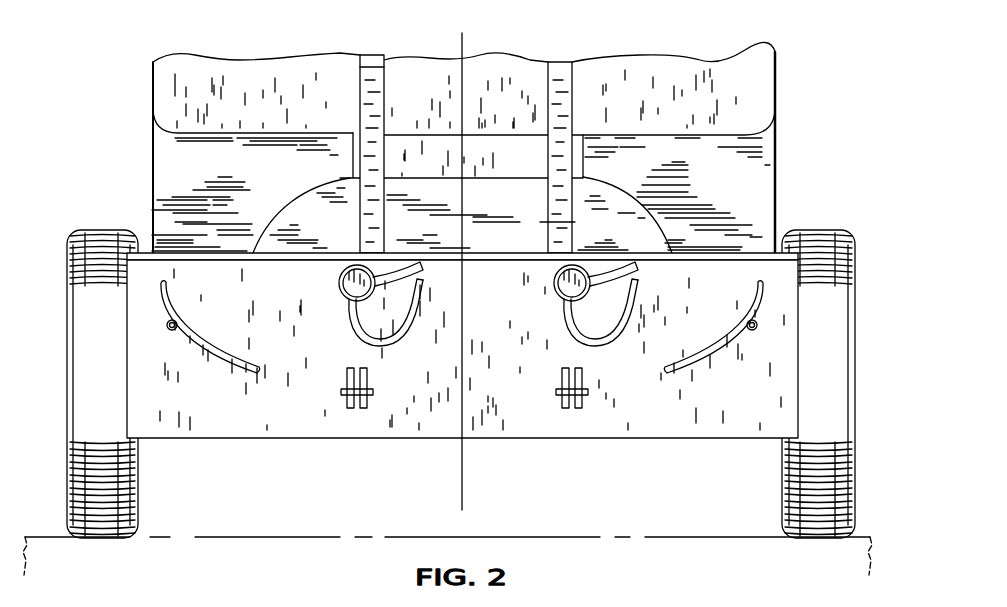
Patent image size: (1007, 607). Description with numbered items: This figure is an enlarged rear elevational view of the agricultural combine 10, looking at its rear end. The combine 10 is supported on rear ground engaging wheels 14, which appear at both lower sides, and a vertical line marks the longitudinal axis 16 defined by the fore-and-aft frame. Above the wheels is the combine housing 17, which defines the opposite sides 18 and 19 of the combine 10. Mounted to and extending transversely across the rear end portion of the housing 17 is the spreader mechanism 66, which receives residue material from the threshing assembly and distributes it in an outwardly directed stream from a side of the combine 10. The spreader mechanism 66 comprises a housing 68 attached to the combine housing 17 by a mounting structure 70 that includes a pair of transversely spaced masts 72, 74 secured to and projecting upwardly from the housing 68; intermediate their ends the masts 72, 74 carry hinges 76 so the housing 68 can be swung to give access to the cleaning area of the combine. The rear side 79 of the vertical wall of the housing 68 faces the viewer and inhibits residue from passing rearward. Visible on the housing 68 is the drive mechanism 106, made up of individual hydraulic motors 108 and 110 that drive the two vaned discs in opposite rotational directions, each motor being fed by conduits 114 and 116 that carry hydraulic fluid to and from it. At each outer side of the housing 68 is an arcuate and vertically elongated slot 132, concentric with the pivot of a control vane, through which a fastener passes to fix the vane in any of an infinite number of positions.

The combine 10 is at (707, 50).
The rear ground engaging wheels 14 is at (128, 516).
The longitudinal axis 16 is at (462, 478).
The housing 17 is at (209, 68).
The side 18 is at (180, 108).
The side 19 is at (779, 68).
The spreader mechanism 66 is at (283, 204).
The housing 68 is at (255, 439).
The mounting structure 70 is at (358, 71).
The mast 72 is at (353, 117).
The mast 74 is at (562, 118).
The hinges 76 is at (376, 62).
The rear side 79 is at (715, 440).
The drive mechanism 106 is at (350, 306).
The motor 108 is at (350, 291).
The motor 110 is at (565, 297).
The conduit 114 is at (395, 343).
The conduit 116 is at (397, 313).
The arcuate and vertically elongated slot 132 is at (216, 371).